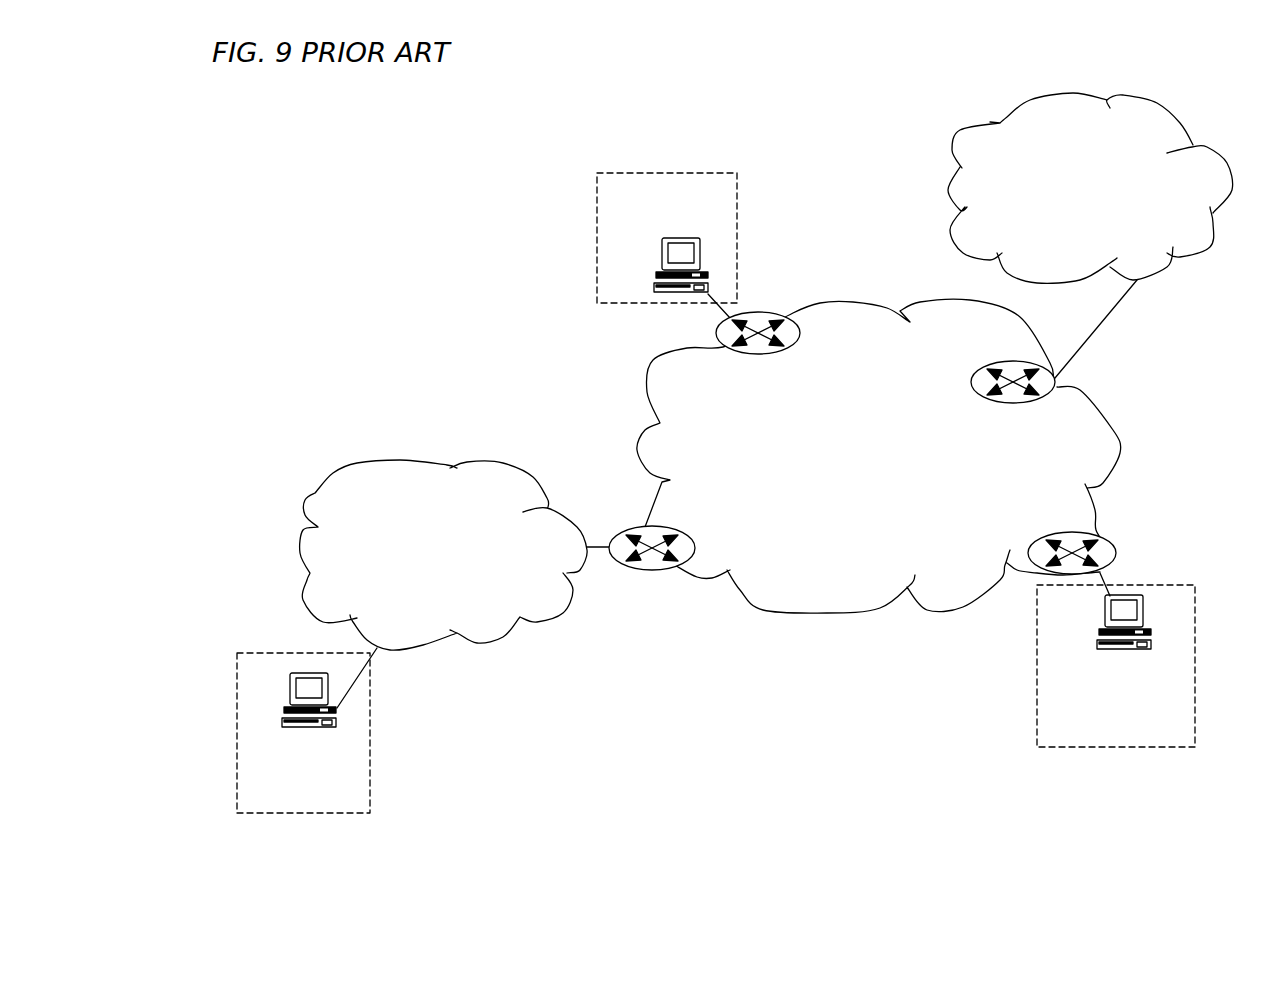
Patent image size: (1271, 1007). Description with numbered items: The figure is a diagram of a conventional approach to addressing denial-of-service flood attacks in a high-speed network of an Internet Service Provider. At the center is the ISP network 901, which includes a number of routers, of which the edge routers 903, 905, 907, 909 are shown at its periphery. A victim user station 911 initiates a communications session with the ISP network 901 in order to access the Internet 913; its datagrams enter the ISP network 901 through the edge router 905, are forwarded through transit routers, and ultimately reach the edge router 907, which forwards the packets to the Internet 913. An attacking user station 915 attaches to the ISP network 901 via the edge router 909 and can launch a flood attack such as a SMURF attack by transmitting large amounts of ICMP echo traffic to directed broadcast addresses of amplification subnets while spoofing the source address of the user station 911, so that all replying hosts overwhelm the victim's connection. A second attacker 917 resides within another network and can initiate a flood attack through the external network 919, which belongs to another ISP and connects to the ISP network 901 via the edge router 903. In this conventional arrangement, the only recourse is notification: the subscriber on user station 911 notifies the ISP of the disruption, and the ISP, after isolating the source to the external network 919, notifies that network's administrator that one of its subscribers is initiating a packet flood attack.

The ISP network 901 is at (968, 457).
The edge router 903 is at (697, 546).
The edge router 905 is at (753, 356).
The edge router 907 is at (988, 364).
The edge router 909 is at (1070, 532).
The user station 911 is at (711, 237).
The Internet 913 is at (1172, 199).
The user station 915 is at (1112, 649).
The attacker 917 is at (309, 729).
The external network 919 is at (511, 570).